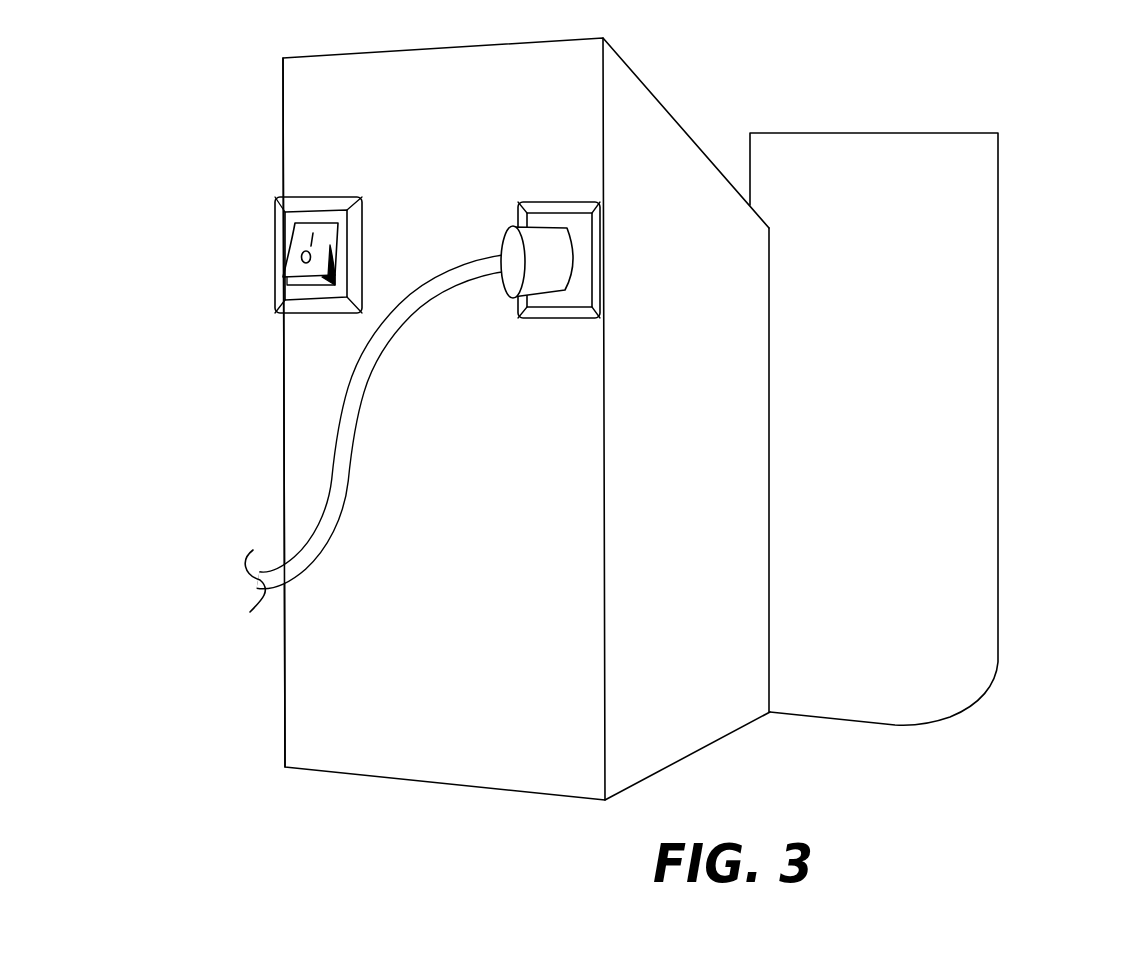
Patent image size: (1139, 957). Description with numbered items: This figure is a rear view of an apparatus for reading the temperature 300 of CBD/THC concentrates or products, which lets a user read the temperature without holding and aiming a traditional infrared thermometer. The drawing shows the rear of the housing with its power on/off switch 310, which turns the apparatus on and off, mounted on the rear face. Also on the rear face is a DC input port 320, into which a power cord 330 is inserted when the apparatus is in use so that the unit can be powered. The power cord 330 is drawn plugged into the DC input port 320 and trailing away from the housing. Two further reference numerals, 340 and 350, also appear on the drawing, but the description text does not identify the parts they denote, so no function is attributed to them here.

The apparatus for reading the temperature 300 is at (652, 419).
The power on/off switch 310 is at (345, 453).
The DC input port 320 is at (283, 240).
The power cord 330 is at (950, 548).
The housing front face 340 is at (337, 682).
The power inlet receptacle with plug 350 is at (556, 207).